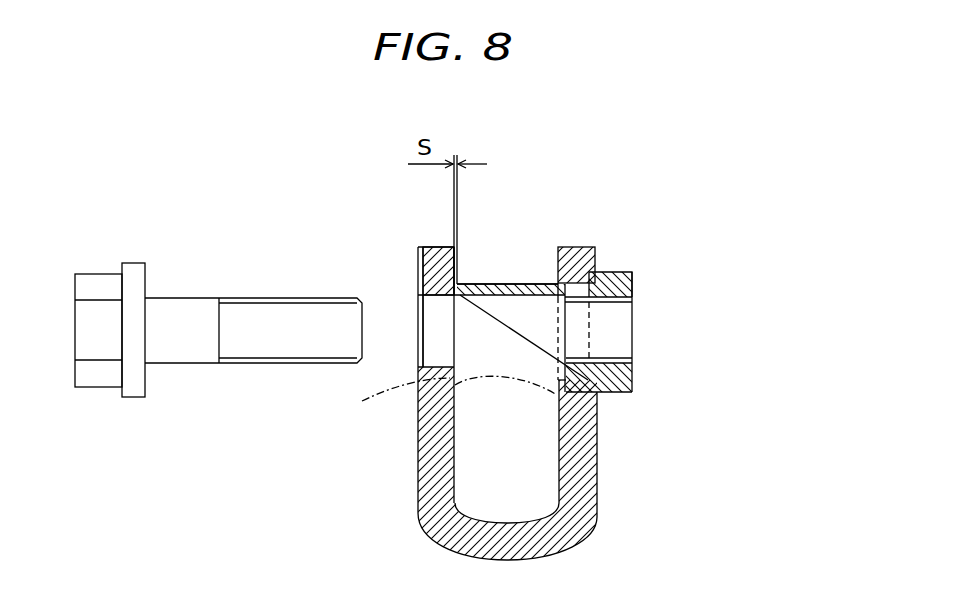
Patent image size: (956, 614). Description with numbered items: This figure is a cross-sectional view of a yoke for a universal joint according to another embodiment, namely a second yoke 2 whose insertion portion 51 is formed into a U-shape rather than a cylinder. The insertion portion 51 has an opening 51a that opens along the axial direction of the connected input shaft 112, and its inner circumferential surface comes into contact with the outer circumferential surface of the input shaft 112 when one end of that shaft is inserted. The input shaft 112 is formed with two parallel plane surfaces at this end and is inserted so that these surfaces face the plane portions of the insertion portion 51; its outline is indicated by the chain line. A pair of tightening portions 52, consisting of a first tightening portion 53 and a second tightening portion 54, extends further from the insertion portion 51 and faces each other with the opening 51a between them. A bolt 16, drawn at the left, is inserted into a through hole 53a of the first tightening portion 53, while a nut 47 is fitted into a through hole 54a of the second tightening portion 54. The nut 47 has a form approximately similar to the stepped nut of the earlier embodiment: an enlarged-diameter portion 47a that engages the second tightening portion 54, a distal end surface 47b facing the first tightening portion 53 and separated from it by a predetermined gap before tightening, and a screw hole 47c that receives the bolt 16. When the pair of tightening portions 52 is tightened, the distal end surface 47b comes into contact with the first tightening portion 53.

The second yoke 2 is at (262, 128).
The bolt 16 is at (95, 278).
The nut 47 is at (660, 309).
The enlarged-diameter portion 47a is at (625, 271).
The distal end surface 47b is at (443, 297).
The screw hole 47c is at (613, 351).
The insertion portion 51 is at (590, 502).
The opening 51a is at (498, 350).
The pair of tightening portions 52 is at (500, 241).
The first tightening portion 53 is at (420, 247).
The through hole 53a is at (425, 307).
The second tightening portion 54 is at (568, 247).
The through hole 54a is at (555, 301).
The input shaft 112 is at (438, 397).